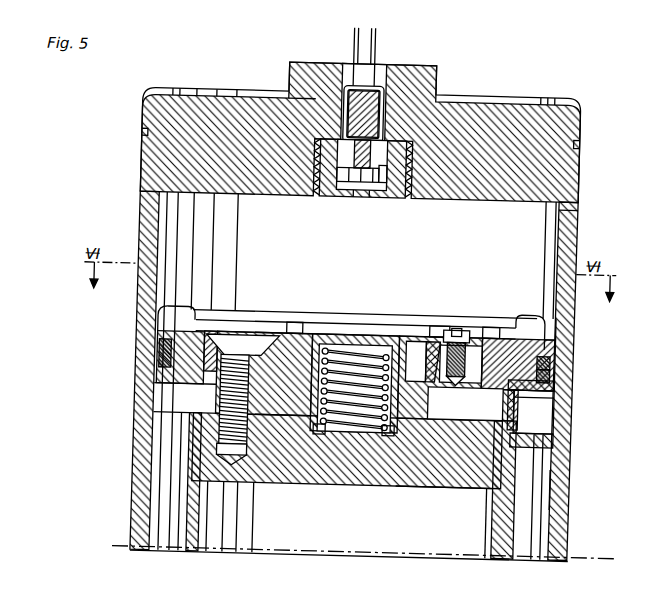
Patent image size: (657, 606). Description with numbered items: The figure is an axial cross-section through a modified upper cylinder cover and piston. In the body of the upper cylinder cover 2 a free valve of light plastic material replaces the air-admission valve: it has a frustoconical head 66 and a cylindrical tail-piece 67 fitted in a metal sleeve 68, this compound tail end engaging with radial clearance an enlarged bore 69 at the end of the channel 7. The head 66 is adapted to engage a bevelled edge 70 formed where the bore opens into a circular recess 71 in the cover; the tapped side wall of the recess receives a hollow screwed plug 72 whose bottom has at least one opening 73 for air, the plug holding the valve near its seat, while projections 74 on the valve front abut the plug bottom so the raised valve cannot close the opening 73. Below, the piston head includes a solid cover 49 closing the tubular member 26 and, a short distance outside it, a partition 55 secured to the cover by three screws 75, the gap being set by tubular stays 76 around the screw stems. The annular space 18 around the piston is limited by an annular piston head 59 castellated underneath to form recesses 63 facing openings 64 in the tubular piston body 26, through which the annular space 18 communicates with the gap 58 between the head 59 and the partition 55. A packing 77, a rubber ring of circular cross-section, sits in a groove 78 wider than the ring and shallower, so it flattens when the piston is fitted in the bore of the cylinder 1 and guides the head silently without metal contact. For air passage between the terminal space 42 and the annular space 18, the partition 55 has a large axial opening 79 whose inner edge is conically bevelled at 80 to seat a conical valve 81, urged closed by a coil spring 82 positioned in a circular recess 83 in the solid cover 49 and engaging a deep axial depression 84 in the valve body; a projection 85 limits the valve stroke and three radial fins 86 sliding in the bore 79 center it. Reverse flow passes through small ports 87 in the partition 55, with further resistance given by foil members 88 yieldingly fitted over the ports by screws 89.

The cylinder 1 is at (567, 218).
The upper cylinder cover 2 is at (487, 117).
The channel 7 is at (360, 64).
The annular space 18 is at (552, 485).
The tubular member 26 is at (516, 536).
The terminal space 42 is at (576, 194).
The solid cover 49 is at (487, 485).
The partition 55 is at (560, 330).
The gap 58 is at (455, 445).
The annular piston head 59 is at (557, 382).
The recesses 63 is at (555, 410).
The openings 64 is at (556, 438).
The frustoconical head 66 is at (400, 160).
The cylindrical tail-piece 67 is at (376, 122).
The metal sleeve 68 is at (378, 92).
The enlarged bore 69 is at (290, 66).
The bevelled edge 70 is at (284, 110).
The circular recess 71 is at (308, 190).
The hollow screwed plug 72 is at (345, 183).
The opening 73 is at (360, 198).
The projections 74 is at (381, 183).
The screws 75 is at (157, 392).
The tubular stays 76 is at (156, 422).
The packing 77 is at (552, 357).
The groove 78 is at (552, 372).
The opening 79 is at (433, 350).
The conically bevelled edge 80 is at (441, 397).
The conical valve 81 is at (406, 354).
The coil spring 82 is at (332, 436).
The circular recess 83 is at (374, 437).
The axial depression 84 is at (381, 360).
The projection 85 is at (413, 440).
The radial fins 86 is at (318, 340).
The ports 87 is at (513, 339).
The foil members 88 is at (479, 337).
The screws 89 is at (450, 328).